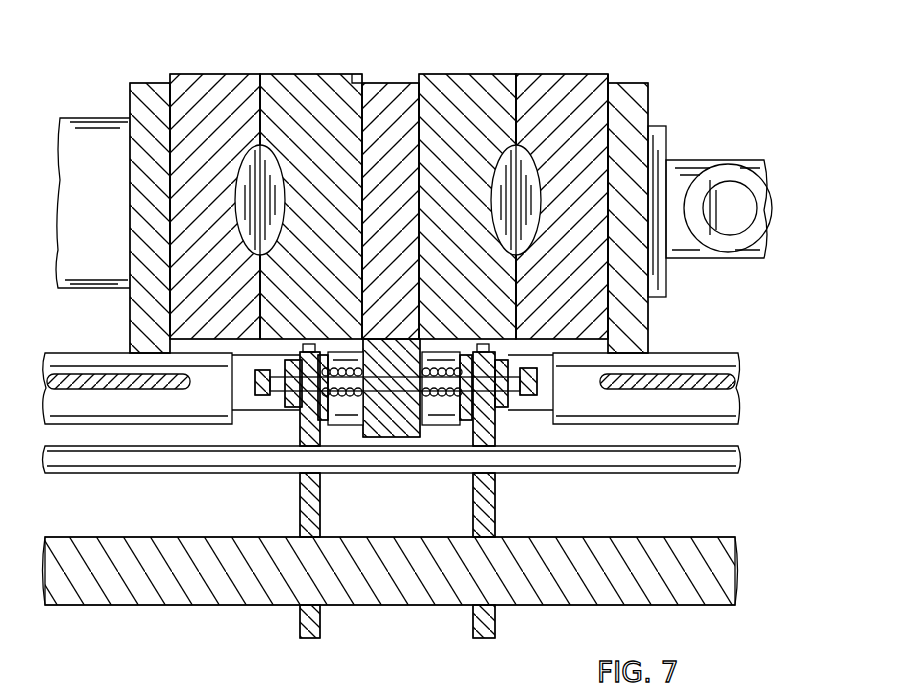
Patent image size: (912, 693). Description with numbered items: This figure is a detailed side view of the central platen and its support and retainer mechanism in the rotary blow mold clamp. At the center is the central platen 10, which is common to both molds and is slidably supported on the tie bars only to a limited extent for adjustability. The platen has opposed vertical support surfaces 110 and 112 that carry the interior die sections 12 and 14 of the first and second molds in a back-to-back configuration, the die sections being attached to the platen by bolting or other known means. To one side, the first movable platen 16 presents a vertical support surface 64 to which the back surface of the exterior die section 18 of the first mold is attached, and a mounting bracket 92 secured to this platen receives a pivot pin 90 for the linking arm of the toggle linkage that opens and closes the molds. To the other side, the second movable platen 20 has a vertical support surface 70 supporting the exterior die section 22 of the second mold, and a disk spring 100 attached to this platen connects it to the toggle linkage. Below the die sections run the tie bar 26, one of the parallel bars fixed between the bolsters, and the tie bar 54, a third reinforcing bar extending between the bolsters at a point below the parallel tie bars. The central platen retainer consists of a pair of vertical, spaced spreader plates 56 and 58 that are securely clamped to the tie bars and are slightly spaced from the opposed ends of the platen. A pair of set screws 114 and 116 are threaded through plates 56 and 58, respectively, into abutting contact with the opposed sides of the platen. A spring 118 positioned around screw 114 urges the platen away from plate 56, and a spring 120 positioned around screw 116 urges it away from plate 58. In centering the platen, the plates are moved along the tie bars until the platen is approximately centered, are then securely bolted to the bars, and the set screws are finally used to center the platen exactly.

The central platen 10 is at (395, 85).
The interior die section 12 is at (480, 85).
The interior die section 14 is at (292, 90).
The first movable platen 16 is at (633, 85).
The exterior die section 18 is at (548, 85).
The second movable platen 20 is at (150, 90).
The exterior die section 22 is at (213, 90).
The tie bar 26 is at (250, 400).
The tie bar 54 is at (228, 590).
The retainer plate 56 is at (497, 503).
The retainer plate 58 is at (322, 503).
The vertical support surface 64 is at (605, 88).
The vertical support surface 70 is at (165, 88).
The pivot pin 90 is at (725, 192).
The mounting bracket 92 is at (658, 130).
The disk spring 100 is at (90, 143).
The vertical support surface 110 is at (420, 85).
The vertical support surface 112 is at (352, 85).
The set screw 114 is at (537, 395).
The set screw 116 is at (265, 400).
The spring 118 is at (448, 400).
The spring 120 is at (365, 440).